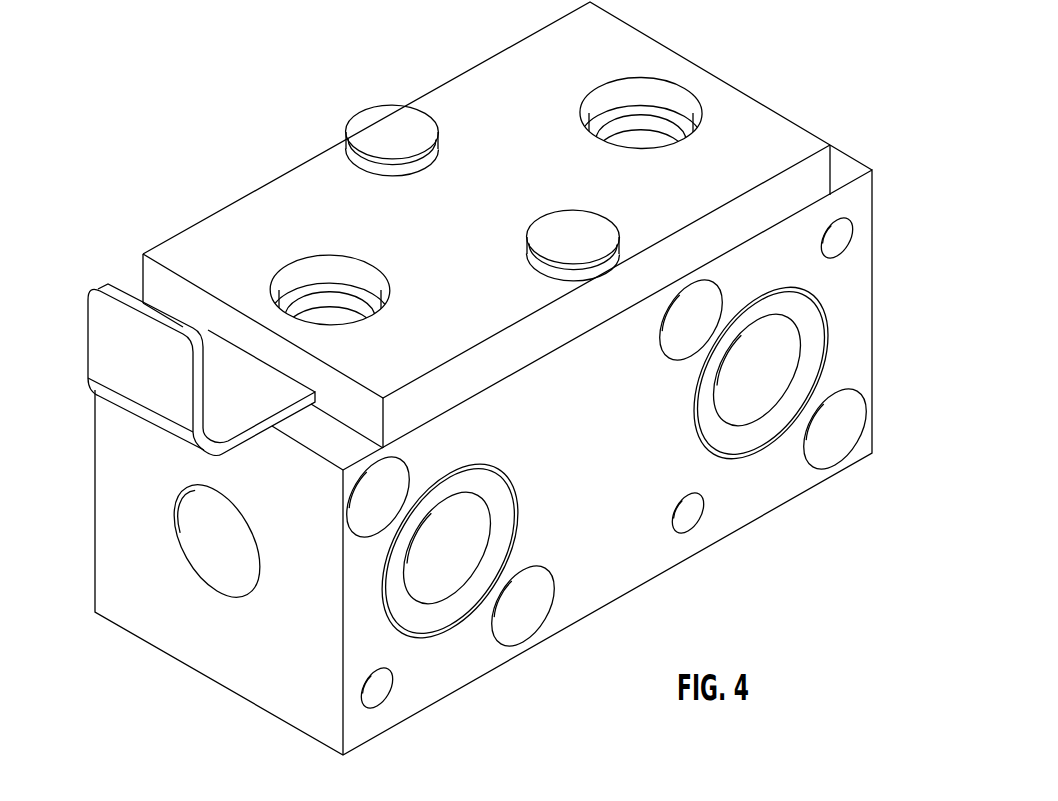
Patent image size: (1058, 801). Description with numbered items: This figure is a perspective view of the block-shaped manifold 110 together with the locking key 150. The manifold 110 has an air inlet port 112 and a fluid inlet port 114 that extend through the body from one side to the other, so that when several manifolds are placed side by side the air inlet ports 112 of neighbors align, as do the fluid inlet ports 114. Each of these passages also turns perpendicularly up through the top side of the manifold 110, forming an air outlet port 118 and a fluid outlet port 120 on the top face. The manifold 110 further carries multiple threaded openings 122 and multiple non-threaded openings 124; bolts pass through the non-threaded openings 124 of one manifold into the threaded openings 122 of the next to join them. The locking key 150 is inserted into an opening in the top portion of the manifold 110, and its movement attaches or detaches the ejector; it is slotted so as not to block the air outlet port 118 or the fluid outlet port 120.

The manifold 110 is at (660, 574).
The air inlet port 112 is at (788, 368).
The fluid inlet port 114 is at (452, 592).
The air outlet port 118 is at (657, 108).
The fluid outlet port 120 is at (319, 284).
The threaded openings 122 is at (843, 242).
The non-threaded openings 124 is at (357, 508).
The locking key 150 is at (103, 340).